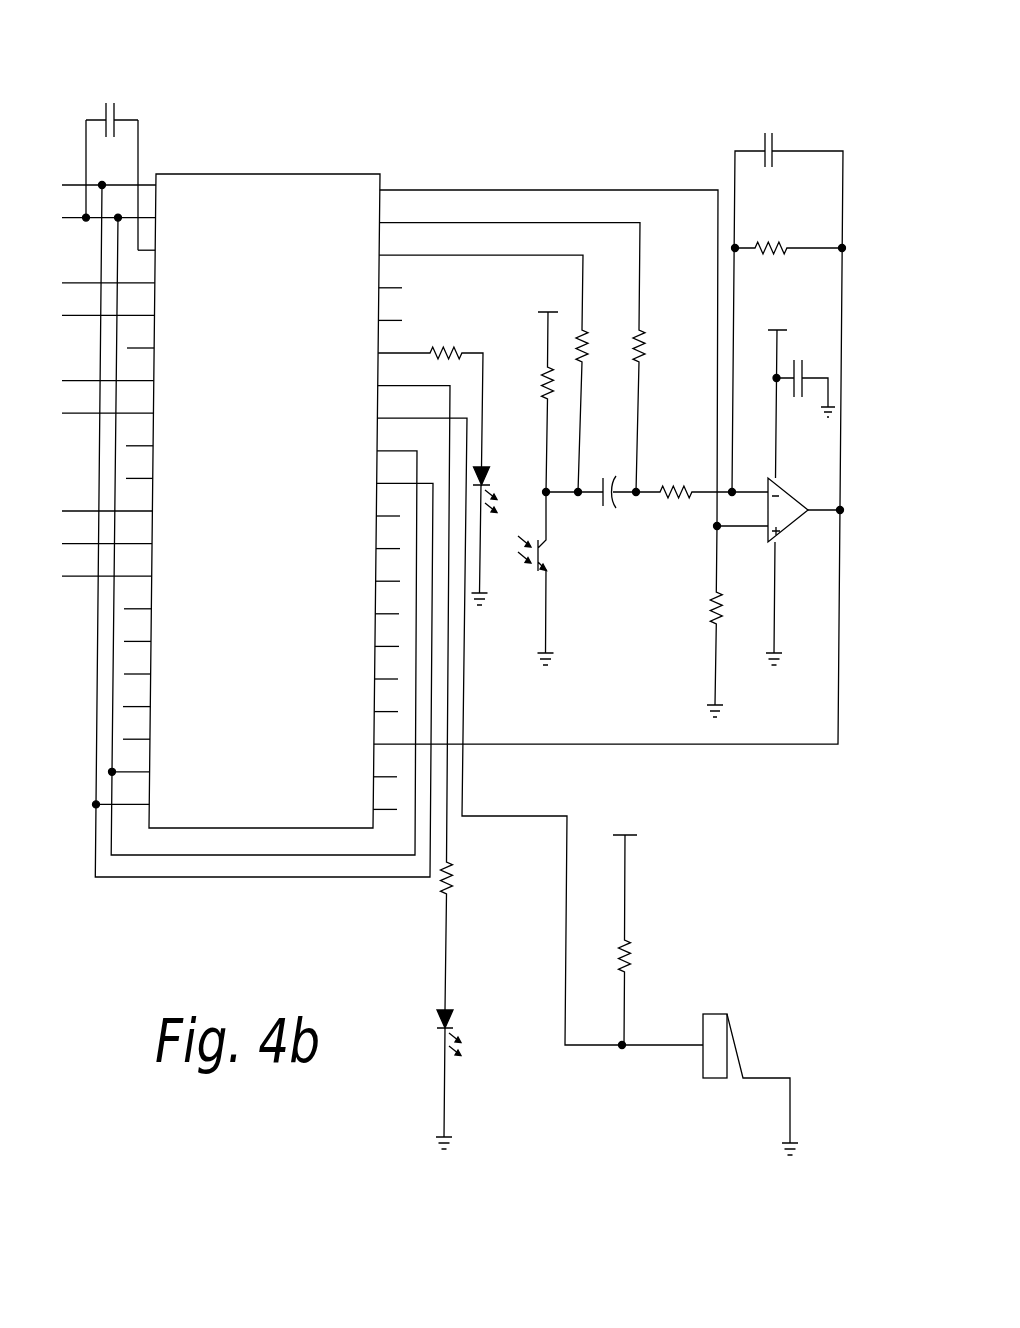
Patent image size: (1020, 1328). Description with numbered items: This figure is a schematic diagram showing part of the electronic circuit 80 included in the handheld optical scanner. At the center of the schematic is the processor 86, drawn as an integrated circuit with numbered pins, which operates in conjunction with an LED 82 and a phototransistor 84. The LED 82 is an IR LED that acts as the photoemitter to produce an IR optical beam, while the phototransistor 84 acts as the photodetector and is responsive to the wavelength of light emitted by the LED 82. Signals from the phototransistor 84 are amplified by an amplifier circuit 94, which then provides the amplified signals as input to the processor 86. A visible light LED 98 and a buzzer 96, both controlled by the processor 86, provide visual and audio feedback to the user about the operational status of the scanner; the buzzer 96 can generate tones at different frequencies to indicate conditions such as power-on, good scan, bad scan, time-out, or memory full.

The electronic circuit 80 is at (532, 97).
The LED 82 is at (484, 464).
The phototransistor 84 is at (537, 568).
The processor 86 is at (312, 173).
The amplifier circuit 94 is at (810, 765).
The buzzer 96 is at (713, 1013).
The visible light LED 98 is at (436, 1018).